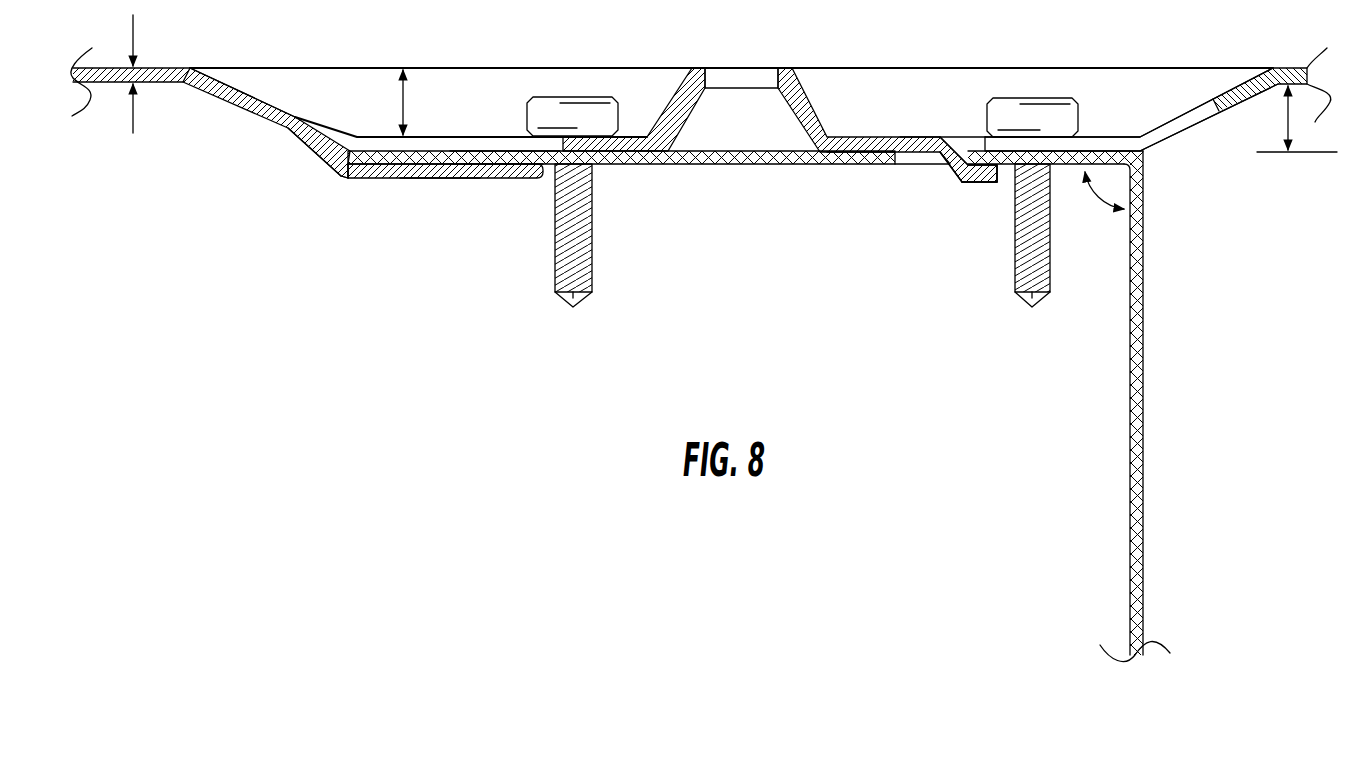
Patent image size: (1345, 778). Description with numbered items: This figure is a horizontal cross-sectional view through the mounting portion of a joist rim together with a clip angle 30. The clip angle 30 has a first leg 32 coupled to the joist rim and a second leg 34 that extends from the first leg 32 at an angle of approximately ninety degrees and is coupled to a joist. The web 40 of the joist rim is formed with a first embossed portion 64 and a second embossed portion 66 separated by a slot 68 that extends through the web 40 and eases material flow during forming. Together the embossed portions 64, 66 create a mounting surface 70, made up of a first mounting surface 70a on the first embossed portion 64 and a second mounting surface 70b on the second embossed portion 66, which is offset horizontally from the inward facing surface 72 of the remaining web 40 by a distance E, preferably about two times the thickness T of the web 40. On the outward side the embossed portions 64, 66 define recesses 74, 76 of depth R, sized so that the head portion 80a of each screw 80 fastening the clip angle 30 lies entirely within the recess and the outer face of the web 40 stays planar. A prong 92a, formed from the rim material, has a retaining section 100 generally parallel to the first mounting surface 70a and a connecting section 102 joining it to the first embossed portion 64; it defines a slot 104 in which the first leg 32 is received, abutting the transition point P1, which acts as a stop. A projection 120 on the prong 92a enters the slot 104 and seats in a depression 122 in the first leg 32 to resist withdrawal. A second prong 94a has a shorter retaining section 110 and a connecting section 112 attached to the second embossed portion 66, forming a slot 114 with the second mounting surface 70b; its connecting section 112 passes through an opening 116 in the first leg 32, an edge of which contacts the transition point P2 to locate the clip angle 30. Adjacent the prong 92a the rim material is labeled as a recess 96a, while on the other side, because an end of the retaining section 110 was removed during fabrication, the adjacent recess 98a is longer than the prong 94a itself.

The clip angle 30 is at (798, 385).
The first leg 32 is at (712, 165).
The second leg 34 is at (1145, 292).
The web 40 is at (701, 111).
The first embossed portion 64 is at (246, 97).
The second embossed portion 66 is at (1255, 106).
The slot 68 is at (787, 174).
The mounting surface 70 is at (855, 163).
The first mounting surface 70a is at (660, 152).
The second mounting surface 70b is at (880, 165).
The inward facing surface 72 is at (178, 86).
The recess 74 is at (250, 96).
The recess 76 is at (1236, 106).
The screw 80 is at (806, 74).
The head portion 80a is at (527, 117).
The prong 92a is at (444, 181).
The prong 94a is at (984, 186).
The flat sheet portion 96a is at (373, 140).
The recess 98a is at (1173, 121).
The retaining section 100 is at (380, 179).
The connecting section 102 is at (320, 149).
The slot 104 is at (343, 168).
The retaining section 110 is at (1000, 182).
The connecting section 112 is at (960, 171).
The slot 114 is at (966, 168).
The opening 116 is at (897, 149).
The projection 120 is at (515, 165).
The depression 122 is at (505, 152).
The transition point P1 is at (352, 181).
The transition point P2 is at (970, 170).
The thickness T is at (134, 120).
The depth R is at (393, 102).
The distance E is at (1289, 118).